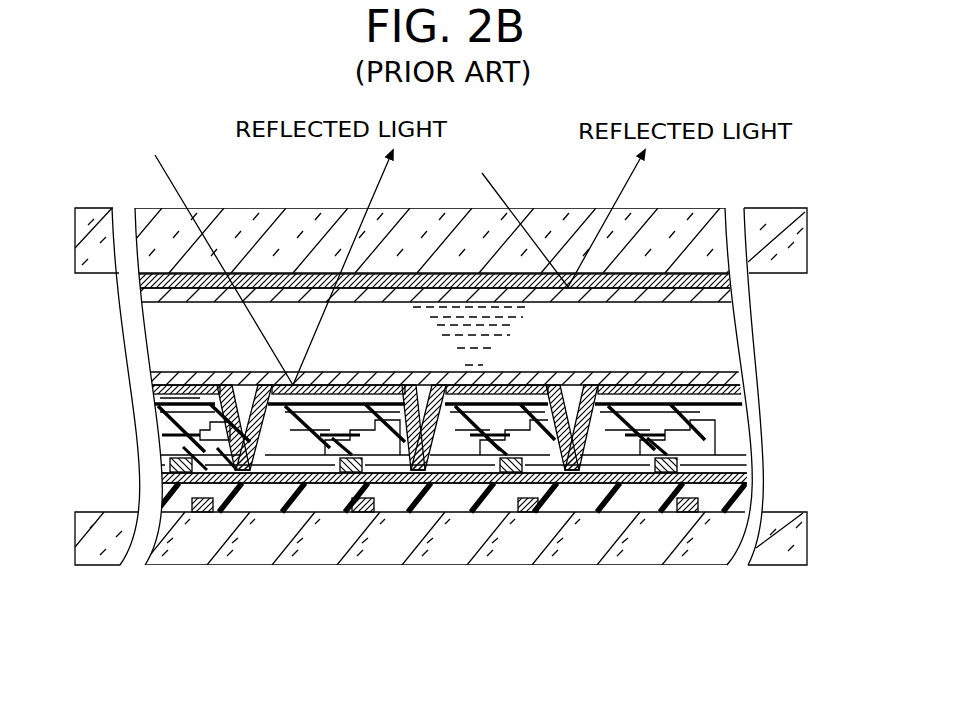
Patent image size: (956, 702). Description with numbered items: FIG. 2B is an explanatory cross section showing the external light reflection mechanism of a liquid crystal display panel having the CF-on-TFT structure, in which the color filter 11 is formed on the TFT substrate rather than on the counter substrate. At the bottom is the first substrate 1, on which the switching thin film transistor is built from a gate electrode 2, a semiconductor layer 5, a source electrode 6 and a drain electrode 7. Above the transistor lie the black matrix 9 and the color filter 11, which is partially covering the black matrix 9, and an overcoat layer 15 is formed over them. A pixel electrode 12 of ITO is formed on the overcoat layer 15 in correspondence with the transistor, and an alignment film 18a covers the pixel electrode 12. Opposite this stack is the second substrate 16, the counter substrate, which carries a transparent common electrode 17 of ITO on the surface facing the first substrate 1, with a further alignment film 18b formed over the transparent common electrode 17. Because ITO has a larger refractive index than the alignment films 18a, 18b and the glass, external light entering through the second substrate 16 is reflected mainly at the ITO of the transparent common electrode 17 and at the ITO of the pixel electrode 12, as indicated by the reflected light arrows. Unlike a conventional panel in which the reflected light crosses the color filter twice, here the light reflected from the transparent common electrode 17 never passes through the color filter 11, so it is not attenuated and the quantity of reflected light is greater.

The first substrate 1 is at (663, 528).
The gate electrode 2 is at (524, 510).
The semiconductor layer 5 is at (220, 492).
The source electrode 6 is at (400, 478).
The drain electrode 7 is at (712, 479).
The black matrix 9 is at (167, 443).
The color filter 11 is at (455, 492).
The pixel electrode 12 is at (192, 383).
The overcoat layer 15 is at (705, 417).
The second substrate 16 is at (699, 230).
The transparent common electrode 17 is at (661, 276).
The alignment film 18a is at (707, 381).
The alignment film 18b is at (700, 297).